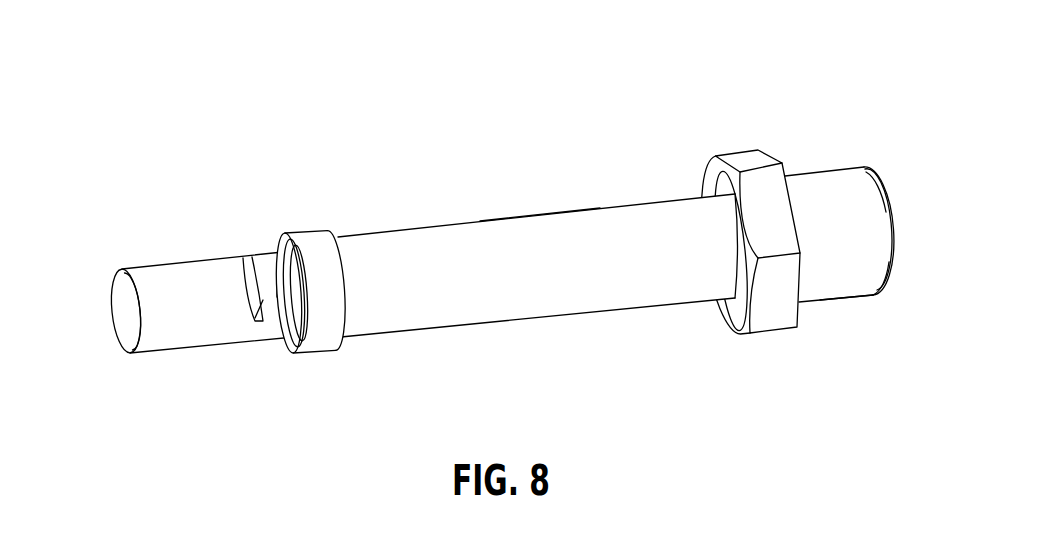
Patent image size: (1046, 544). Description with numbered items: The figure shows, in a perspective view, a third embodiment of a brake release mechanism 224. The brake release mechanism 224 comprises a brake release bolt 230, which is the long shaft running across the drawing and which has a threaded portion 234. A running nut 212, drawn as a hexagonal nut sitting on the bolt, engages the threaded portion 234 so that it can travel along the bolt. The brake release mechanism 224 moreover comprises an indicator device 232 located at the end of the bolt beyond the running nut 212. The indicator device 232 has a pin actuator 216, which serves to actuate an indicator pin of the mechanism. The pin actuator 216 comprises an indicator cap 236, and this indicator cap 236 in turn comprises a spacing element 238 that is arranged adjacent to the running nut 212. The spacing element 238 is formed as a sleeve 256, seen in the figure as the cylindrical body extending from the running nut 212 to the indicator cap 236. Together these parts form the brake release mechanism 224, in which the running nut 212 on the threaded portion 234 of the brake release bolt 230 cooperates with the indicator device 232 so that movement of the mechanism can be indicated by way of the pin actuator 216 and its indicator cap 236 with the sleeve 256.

The brake release mechanism 224 is at (147, 163).
The running nut 212 is at (768, 305).
The brake release bolt 230 is at (375, 307).
The threaded portion 234 is at (540, 212).
The spacing element 238 is at (827, 207).
The indicator device 232 is at (868, 160).
The pin actuator 216 is at (895, 213).
The indicator cap 236 is at (893, 284).
The sleeve 256 is at (855, 268).